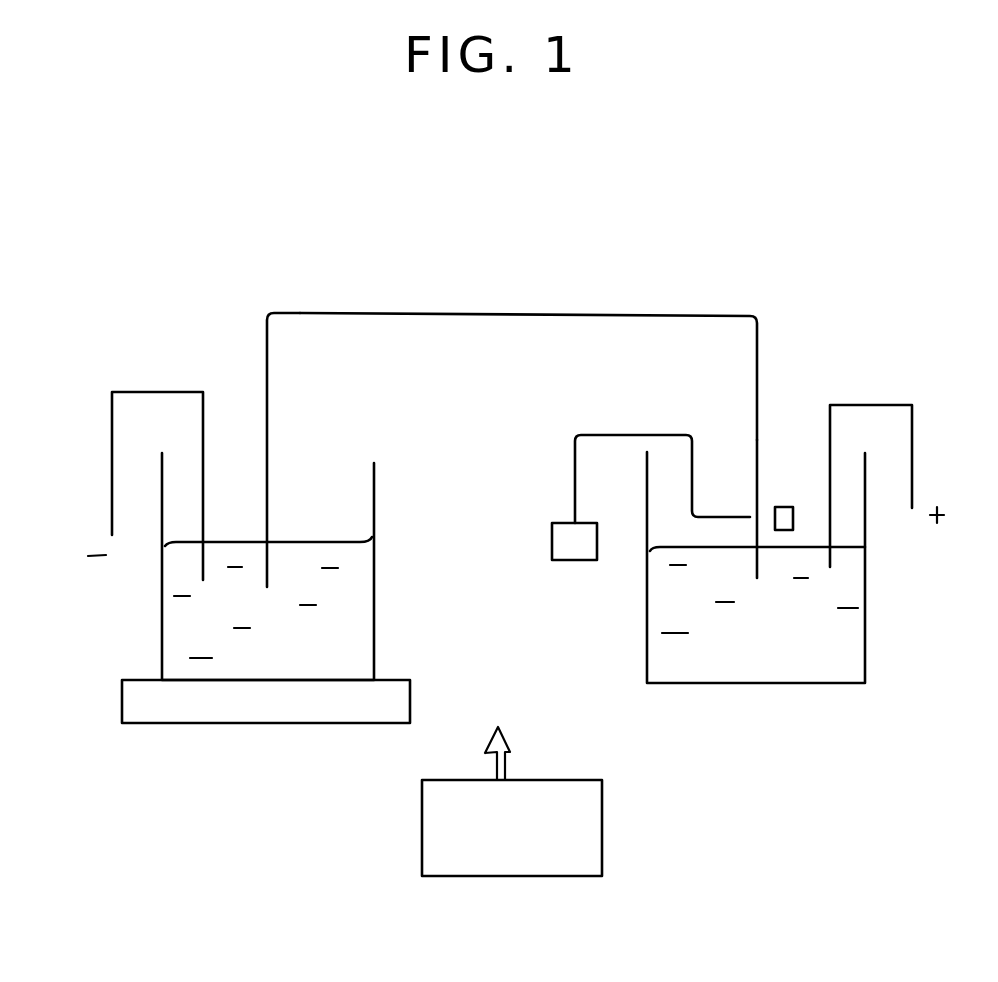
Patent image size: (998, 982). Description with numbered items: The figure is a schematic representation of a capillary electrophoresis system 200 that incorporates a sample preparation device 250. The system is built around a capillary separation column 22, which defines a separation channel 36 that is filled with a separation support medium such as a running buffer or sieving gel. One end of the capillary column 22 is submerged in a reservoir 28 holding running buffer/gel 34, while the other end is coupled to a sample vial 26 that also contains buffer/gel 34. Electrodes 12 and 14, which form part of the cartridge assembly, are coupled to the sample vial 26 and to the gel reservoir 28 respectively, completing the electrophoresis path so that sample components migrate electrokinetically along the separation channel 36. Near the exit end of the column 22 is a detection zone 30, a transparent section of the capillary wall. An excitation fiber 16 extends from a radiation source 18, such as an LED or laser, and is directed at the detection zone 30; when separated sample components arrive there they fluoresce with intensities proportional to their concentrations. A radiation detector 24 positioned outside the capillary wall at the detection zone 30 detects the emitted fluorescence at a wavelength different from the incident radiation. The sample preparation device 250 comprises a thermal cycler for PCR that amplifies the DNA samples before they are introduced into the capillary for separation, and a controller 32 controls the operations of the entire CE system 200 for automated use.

The capillary electrophoresis system 200 is at (612, 270).
The electrode 12 is at (110, 418).
The electrode 14 is at (913, 433).
The excitation fiber 16 is at (575, 470).
The radiation source 18 is at (573, 560).
The capillary separation column 22 is at (368, 315).
The radiation detector 24 is at (785, 507).
The sample vial 26 is at (375, 592).
The reservoir 28 is at (866, 637).
The detection zone 30 is at (750, 512).
The controller 32 is at (512, 801).
The running buffer/gel 34 is at (515, 597).
The separation channel 36 is at (413, 313).
The sample preparation device 250 is at (266, 701).